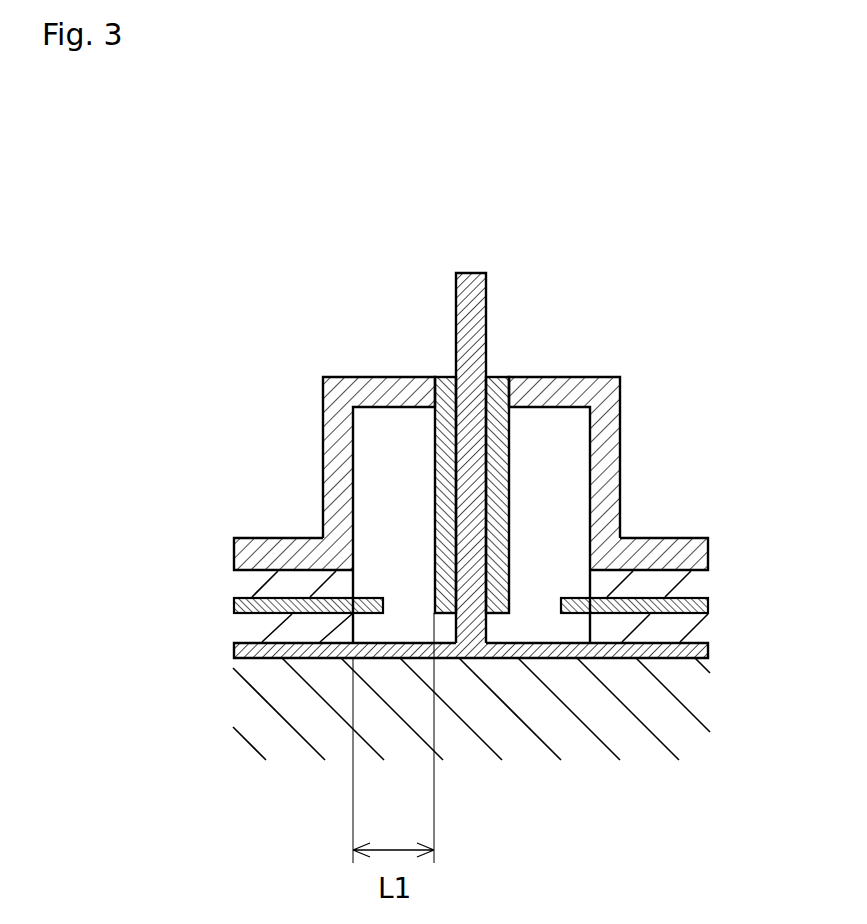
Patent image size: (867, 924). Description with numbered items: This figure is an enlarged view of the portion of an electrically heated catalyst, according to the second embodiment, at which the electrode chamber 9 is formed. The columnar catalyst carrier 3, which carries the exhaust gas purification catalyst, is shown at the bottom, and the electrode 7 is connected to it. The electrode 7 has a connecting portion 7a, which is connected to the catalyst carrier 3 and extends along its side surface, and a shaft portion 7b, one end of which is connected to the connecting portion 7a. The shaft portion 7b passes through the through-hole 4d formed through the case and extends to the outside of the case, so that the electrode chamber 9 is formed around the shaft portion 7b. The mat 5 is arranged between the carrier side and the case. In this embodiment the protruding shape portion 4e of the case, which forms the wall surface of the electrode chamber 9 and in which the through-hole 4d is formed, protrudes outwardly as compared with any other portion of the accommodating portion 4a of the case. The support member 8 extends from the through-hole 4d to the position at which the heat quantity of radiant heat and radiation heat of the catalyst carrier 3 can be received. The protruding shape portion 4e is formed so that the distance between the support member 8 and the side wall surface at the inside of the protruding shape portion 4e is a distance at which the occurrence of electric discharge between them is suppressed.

The catalyst carrier 3 is at (293, 703).
The accommodating portion 4a is at (288, 552).
The through-hole 4d is at (497, 377).
The protruding shape portion 4e is at (620, 448).
The mat 5 is at (653, 580).
The electrode 7 is at (512, 447).
The connecting portion 7a is at (625, 657).
The shaft portion 7b is at (463, 307).
The support member 8 is at (442, 377).
The electrode chamber 9 is at (394, 506).